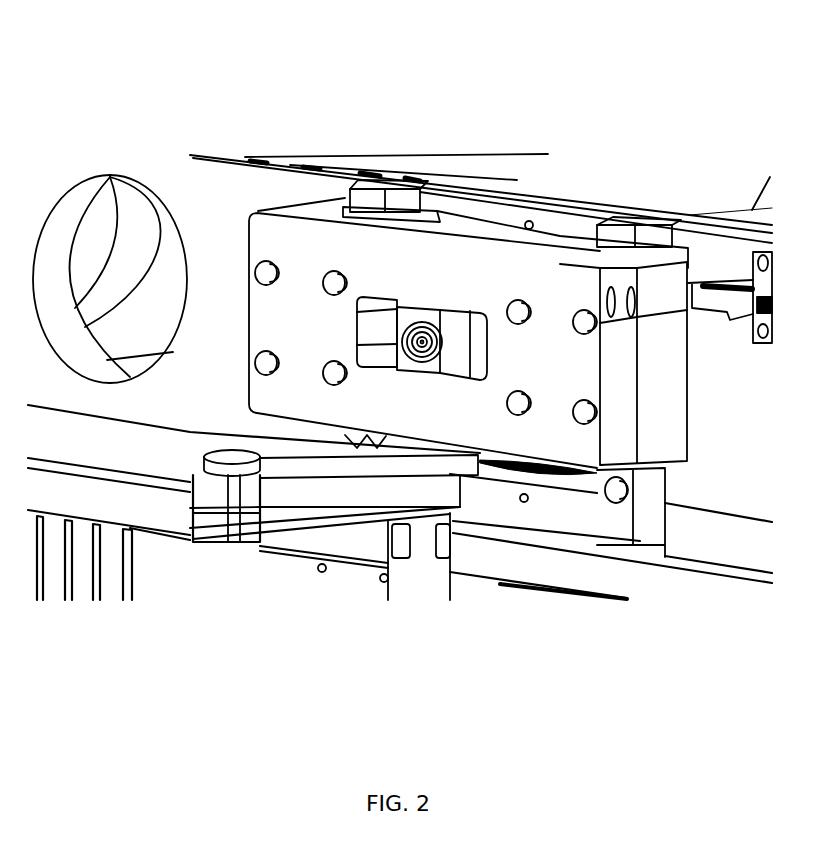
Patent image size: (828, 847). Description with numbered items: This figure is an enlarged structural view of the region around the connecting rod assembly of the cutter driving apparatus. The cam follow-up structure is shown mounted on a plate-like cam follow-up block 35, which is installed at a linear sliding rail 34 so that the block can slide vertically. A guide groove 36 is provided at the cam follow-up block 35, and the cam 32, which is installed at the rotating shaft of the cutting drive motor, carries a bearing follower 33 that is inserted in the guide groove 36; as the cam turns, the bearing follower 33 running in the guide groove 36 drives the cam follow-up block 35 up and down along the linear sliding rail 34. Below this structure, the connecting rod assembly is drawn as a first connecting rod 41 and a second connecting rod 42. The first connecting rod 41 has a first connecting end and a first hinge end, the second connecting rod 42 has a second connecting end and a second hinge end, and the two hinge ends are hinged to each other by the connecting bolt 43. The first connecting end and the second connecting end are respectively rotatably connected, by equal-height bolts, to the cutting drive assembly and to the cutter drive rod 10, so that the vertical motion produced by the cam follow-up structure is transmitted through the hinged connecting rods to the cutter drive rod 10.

The cutter drive rod 10 is at (437, 580).
The cam 32 is at (485, 330).
The bearing follower 33 is at (453, 313).
The linear sliding rail 34 is at (622, 228).
The cam follow-up block 35 is at (412, 263).
The guide groove 36 is at (357, 297).
The first connecting rod 41 is at (313, 478).
The second connecting rod 42 is at (283, 518).
The connecting bolt 43 is at (239, 455).